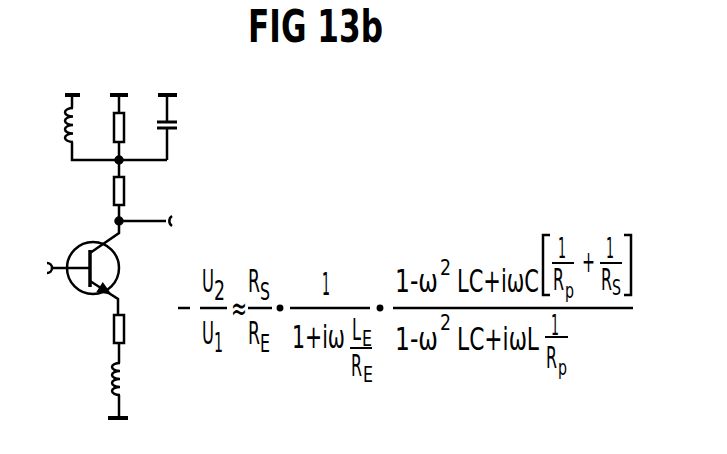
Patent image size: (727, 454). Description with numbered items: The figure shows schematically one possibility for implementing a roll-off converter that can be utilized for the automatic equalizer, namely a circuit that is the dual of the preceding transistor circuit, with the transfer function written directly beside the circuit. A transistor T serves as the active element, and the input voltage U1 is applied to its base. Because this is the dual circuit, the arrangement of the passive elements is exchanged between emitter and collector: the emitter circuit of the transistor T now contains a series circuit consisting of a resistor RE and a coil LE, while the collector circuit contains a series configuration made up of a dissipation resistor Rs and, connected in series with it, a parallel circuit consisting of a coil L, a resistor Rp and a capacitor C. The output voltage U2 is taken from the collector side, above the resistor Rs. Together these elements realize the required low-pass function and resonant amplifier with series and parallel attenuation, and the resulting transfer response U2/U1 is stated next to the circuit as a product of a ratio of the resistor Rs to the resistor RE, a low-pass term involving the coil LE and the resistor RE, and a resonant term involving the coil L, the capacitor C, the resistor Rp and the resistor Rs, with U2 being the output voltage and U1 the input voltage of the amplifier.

The coil L is at (92, 127).
The resistor Rp is at (130, 129).
The capacitor C is at (155, 127).
The dissipation resistor Rs is at (132, 192).
The output voltage U2 is at (158, 228).
The transistor T is at (101, 268).
The input voltage U1 is at (52, 274).
The resistor RE is at (132, 339).
The coil LE is at (129, 390).